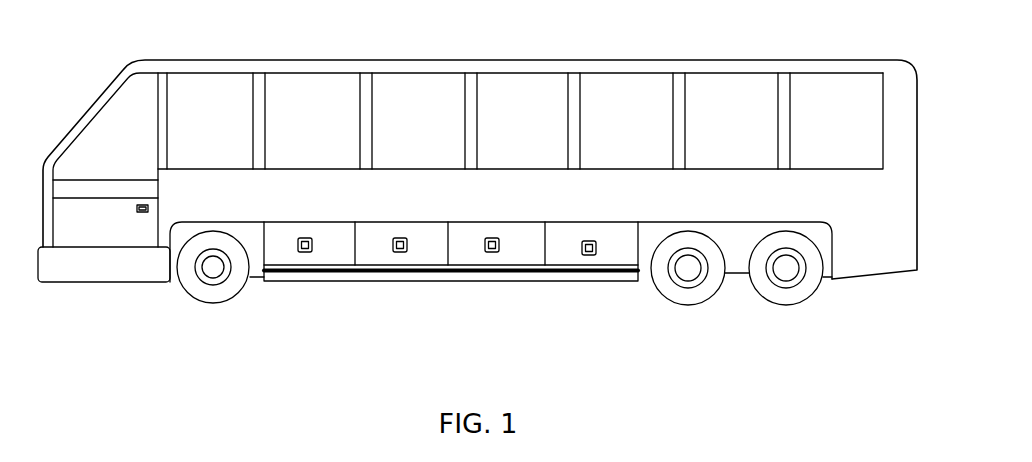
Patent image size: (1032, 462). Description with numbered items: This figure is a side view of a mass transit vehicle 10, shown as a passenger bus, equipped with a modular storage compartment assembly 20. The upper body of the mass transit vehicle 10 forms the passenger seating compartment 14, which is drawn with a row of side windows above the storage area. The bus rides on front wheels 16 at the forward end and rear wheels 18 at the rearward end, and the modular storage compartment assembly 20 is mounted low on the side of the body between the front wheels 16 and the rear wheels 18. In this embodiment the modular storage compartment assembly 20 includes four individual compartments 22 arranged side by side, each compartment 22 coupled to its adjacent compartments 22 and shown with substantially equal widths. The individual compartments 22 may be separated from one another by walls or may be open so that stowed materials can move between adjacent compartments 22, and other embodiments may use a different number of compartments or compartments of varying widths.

The mass transit vehicle 10 is at (238, 47).
The passenger seating compartment 14 is at (403, 182).
The front wheels 16 is at (192, 282).
The rear wheels 18 is at (707, 288).
The modular storage compartment assembly 20 is at (420, 305).
The individual compartment 22 is at (573, 258).